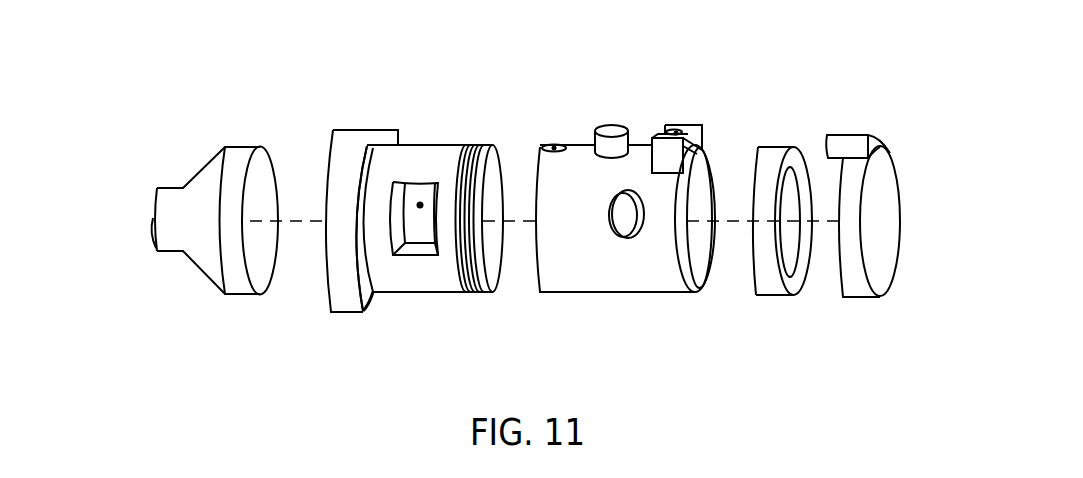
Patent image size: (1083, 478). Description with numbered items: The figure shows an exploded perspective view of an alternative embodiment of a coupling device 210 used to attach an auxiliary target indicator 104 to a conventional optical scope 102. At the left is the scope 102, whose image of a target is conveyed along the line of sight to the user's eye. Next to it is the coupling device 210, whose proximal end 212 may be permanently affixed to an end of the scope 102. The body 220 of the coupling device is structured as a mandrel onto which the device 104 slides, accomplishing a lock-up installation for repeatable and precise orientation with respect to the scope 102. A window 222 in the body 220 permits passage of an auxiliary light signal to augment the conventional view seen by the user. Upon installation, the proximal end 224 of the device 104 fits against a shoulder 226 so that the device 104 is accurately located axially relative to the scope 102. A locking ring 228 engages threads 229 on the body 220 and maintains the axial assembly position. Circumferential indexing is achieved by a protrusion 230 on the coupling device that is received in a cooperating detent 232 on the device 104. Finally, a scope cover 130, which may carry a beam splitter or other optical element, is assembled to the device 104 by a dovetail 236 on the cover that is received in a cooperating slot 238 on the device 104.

The optical scope 102 is at (237, 152).
The auxiliary target indicator 104 is at (619, 231).
The scope cover 130 is at (863, 209).
The coupling device 210 is at (473, 111).
The proximal end 212 is at (385, 225).
The body 220 is at (443, 207).
The window 222 is at (420, 202).
The proximal end of device 224 is at (538, 274).
The shoulder 226 is at (375, 273).
The locking ring 228 is at (772, 287).
The threads 229 is at (483, 143).
The protrusion 230 is at (385, 138).
The detent 232 is at (554, 146).
The dovetail 236 is at (842, 143).
The slot 238 is at (676, 132).